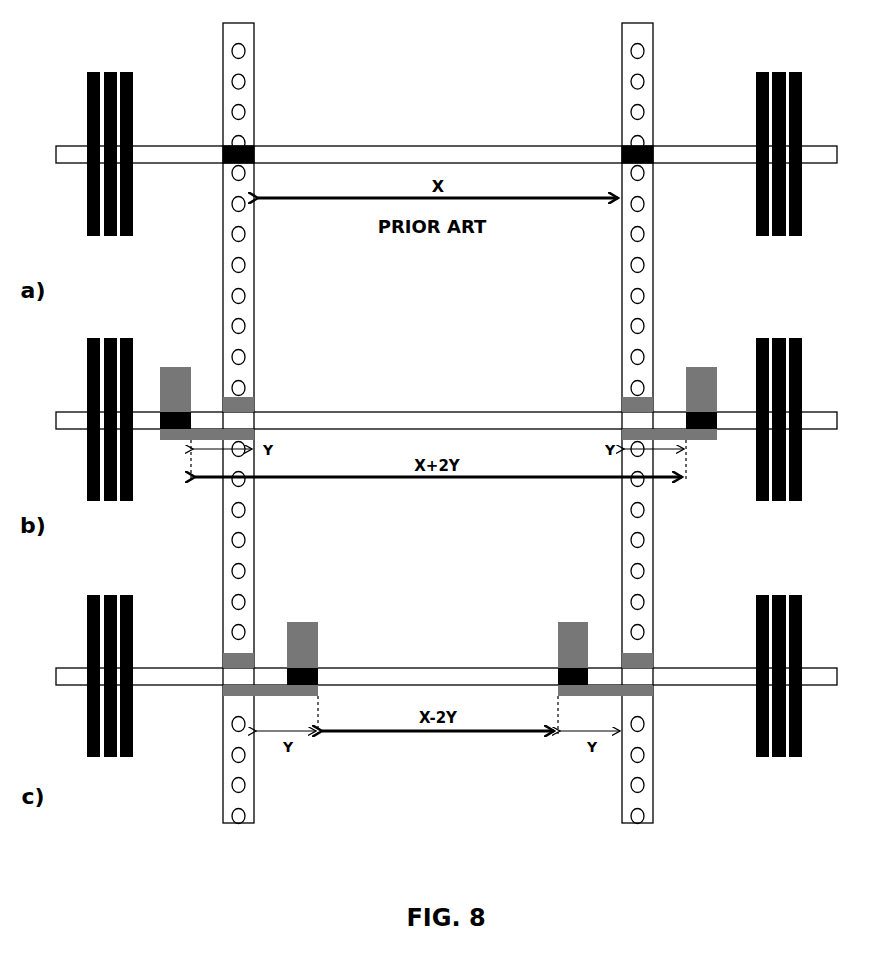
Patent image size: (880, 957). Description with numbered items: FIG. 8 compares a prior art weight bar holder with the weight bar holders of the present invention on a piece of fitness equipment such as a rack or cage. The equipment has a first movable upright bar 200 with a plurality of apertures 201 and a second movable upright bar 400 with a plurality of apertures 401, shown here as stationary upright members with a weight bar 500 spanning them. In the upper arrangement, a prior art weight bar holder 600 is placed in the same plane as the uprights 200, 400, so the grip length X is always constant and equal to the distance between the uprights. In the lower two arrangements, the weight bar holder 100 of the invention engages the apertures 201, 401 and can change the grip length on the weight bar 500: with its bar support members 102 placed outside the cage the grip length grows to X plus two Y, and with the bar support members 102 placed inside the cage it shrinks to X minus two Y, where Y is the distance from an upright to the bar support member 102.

The weight bar holder 100 is at (254, 401).
The bar support member 102 is at (161, 419).
The first movable upright bar 200 is at (646, 63).
The apertures 201 is at (639, 298).
The second movable upright bar 400 is at (223, 67).
The apertures 401 is at (236, 297).
The weight bar 500 is at (360, 152).
The prior art weight bar holder 600 is at (223, 148).